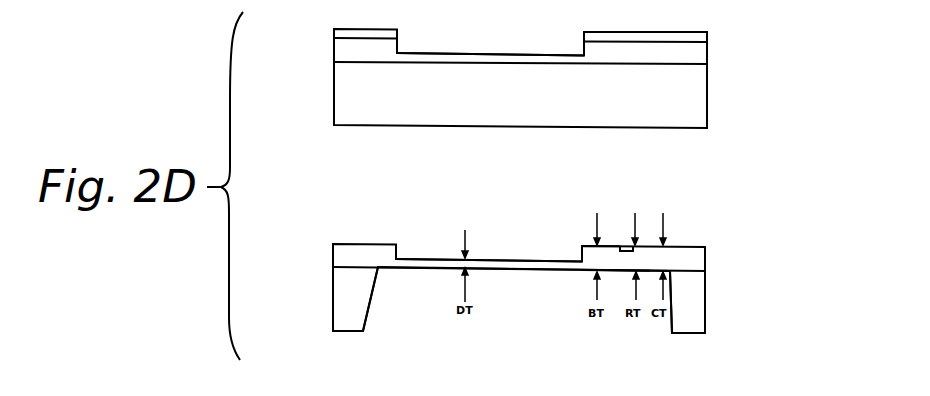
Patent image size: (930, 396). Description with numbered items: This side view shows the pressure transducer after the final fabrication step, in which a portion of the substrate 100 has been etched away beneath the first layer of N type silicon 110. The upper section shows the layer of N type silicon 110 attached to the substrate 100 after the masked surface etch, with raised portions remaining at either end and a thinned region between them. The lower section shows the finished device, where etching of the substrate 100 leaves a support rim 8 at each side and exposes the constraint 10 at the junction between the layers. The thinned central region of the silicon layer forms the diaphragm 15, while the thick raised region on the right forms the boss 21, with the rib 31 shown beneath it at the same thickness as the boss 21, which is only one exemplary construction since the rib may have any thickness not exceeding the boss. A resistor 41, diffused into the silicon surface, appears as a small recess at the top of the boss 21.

The support rim 8 is at (333, 320).
The constraint 10 is at (378, 268).
The diaphragm 15 is at (450, 53).
The boss 21 is at (590, 245).
The rib 31 is at (617, 272).
The resistor 41 is at (627, 245).
The substrate 100 is at (707, 105).
The first layer of N type silicon 110 is at (334, 53).